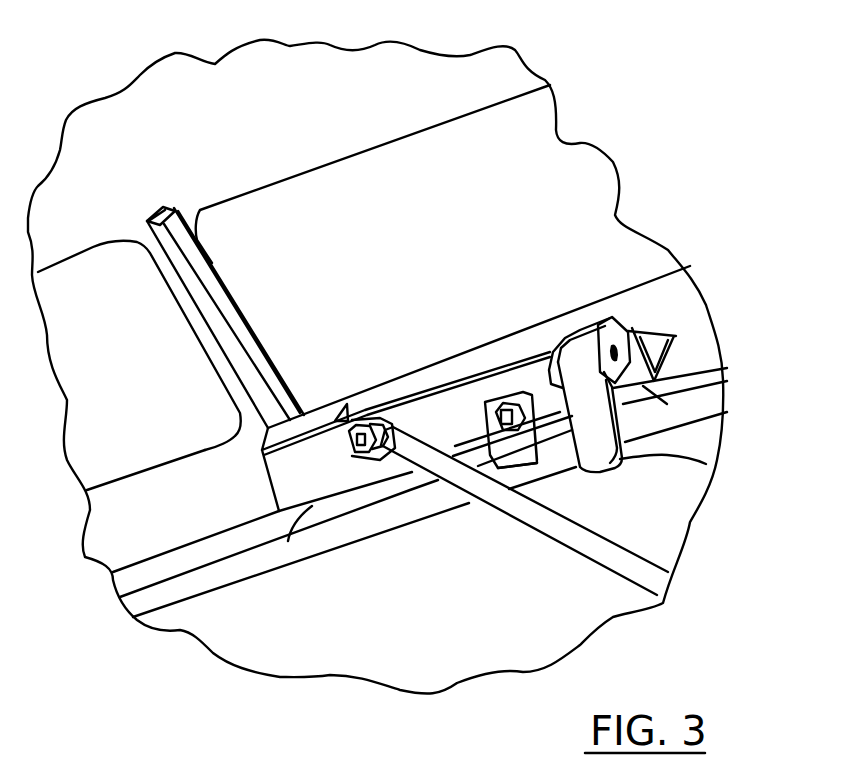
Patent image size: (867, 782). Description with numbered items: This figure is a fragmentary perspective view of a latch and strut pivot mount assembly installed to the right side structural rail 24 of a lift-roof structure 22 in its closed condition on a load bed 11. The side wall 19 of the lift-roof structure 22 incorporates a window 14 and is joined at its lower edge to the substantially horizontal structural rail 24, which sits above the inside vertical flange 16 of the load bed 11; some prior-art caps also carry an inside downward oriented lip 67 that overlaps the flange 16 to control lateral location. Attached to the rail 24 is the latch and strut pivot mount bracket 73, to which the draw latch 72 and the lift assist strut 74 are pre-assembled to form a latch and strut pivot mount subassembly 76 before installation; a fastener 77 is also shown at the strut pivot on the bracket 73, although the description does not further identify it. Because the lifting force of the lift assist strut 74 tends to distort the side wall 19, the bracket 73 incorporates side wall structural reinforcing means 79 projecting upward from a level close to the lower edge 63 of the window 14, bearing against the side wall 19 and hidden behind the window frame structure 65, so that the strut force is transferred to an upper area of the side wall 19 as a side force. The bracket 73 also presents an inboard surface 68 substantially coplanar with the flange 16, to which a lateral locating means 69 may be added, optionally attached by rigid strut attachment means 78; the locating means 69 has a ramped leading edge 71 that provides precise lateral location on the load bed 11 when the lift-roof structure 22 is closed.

The load bed 11 is at (452, 656).
The window 14 is at (567, 180).
The inside vertical flange 16 is at (287, 553).
The side wall 19 is at (262, 313).
The lift-roof structure 22 is at (195, 521).
The structural rail 24 is at (687, 358).
The lower edge of window 63 is at (162, 457).
The window frame structure 65 is at (207, 353).
The inside downward oriented lip 67 is at (187, 570).
The inboard surface 68 is at (430, 413).
The lateral locating means 69 is at (497, 468).
The ramped leading edge 71 is at (531, 401).
The draw latch 72 is at (713, 462).
The latch and strut pivot mount bracket 73 is at (386, 440).
The lift assist strut 74 is at (655, 556).
The latch and strut pivot mount subassembly 76 is at (626, 342).
The nut 77 is at (380, 418).
The rigid strut attachment means 78 is at (507, 401).
The side wall structural reinforcing means 79 is at (217, 327).